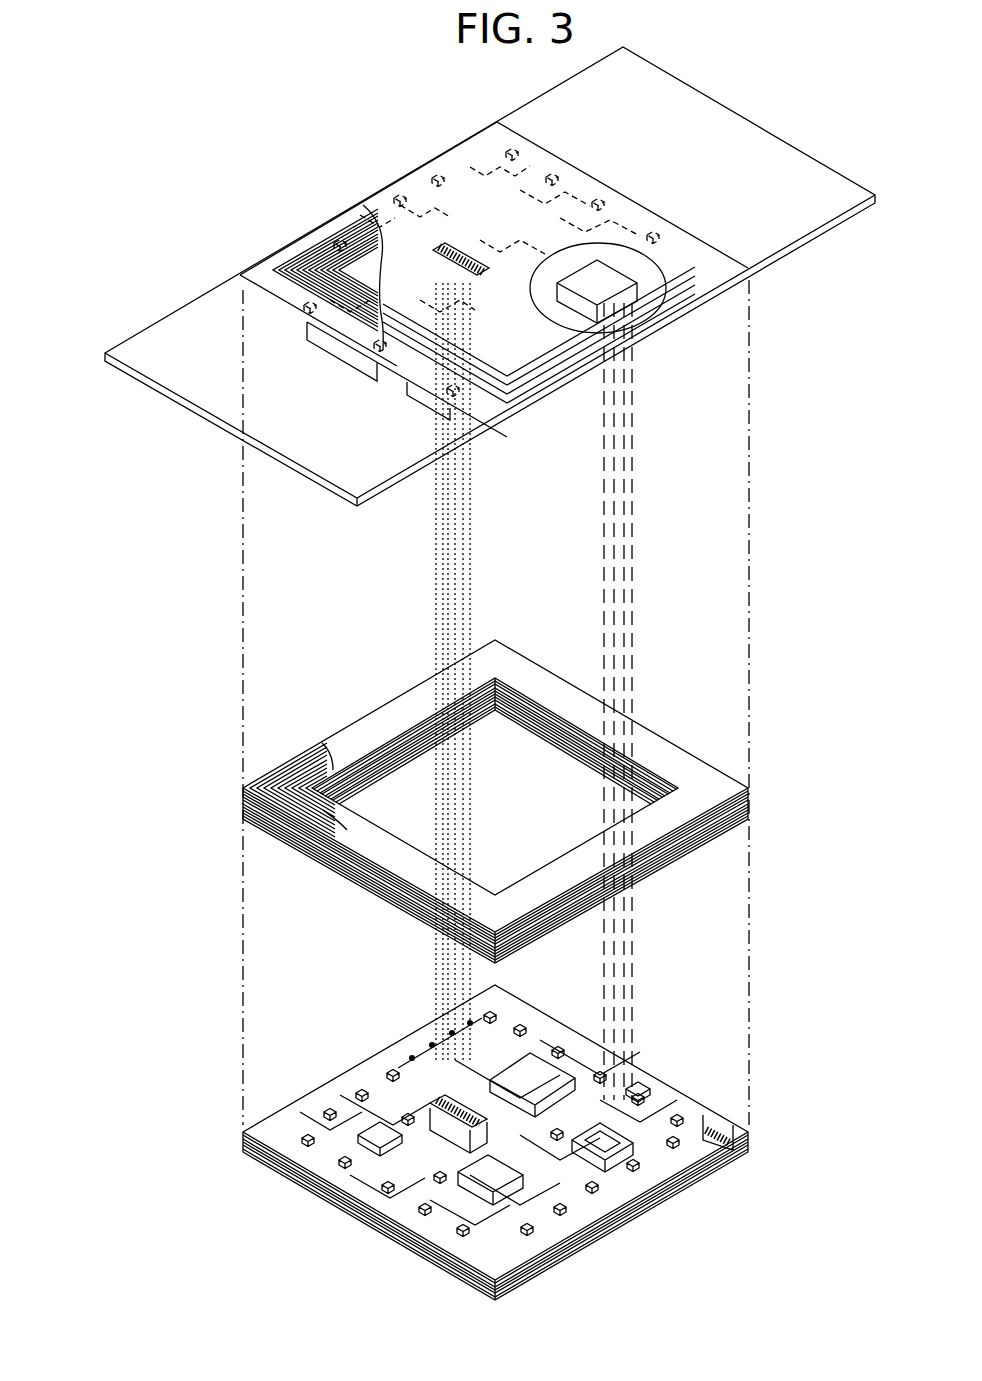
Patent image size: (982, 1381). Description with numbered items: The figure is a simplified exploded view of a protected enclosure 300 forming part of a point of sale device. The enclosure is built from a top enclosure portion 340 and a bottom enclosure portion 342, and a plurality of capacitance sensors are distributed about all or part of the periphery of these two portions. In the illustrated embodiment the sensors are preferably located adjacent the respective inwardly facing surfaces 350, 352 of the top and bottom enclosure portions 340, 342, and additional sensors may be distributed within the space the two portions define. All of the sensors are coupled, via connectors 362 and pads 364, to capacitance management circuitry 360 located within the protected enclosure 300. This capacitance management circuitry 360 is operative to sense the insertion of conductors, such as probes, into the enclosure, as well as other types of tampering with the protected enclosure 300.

The protected enclosure 300 is at (207, 675).
The top enclosure portion 340 is at (694, 258).
The bottom enclosure portion 342 is at (730, 1125).
The inwardly facing surface 350 is at (680, 320).
The inwardly facing surface 352 is at (637, 1082).
The capacitance management circuitry 360 is at (533, 1180).
The connectors 362 is at (458, 1135).
The pads 364 is at (446, 252).